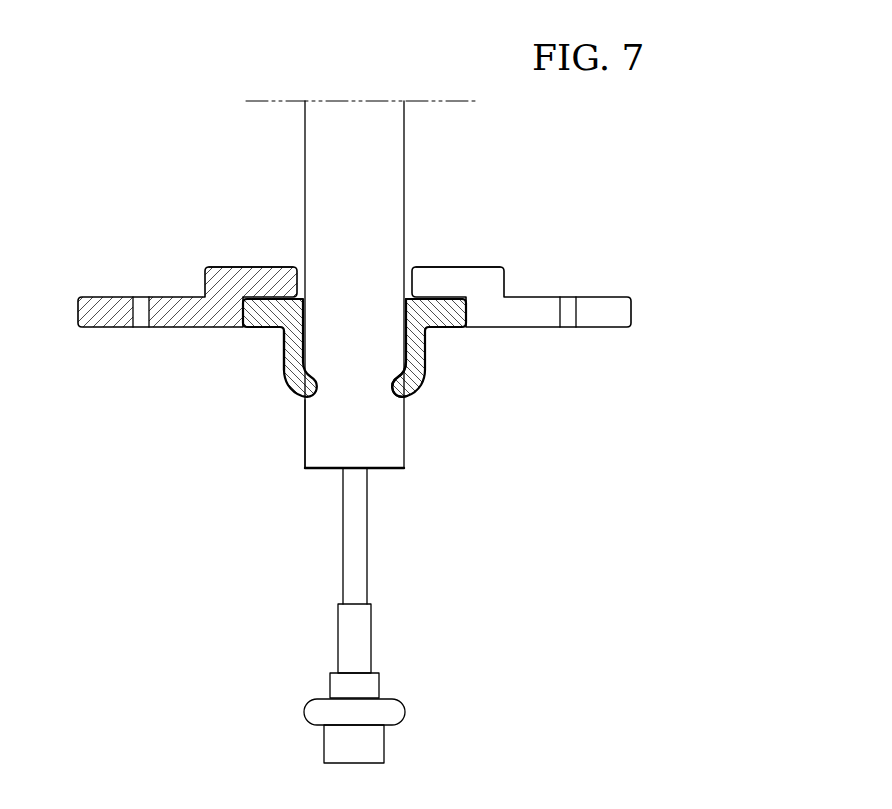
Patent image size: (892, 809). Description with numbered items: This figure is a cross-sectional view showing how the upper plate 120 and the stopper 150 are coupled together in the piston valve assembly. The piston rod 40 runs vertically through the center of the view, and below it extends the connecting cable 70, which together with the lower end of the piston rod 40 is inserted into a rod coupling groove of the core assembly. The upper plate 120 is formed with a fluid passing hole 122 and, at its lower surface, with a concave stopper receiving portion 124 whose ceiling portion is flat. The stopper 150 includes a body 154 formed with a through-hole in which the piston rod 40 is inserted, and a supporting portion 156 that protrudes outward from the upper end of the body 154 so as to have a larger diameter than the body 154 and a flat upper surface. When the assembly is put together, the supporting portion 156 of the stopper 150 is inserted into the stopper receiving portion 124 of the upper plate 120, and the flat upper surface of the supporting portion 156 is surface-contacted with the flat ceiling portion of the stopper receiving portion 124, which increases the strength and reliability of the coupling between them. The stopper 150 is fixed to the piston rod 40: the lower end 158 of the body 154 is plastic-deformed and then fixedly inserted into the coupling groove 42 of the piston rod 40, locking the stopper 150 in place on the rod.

The piston rod 40 is at (387, 163).
The coupling groove 42 is at (312, 390).
The connecting cable 70 is at (370, 633).
The upper plate 120 is at (390, 275).
The fluid passing hole 122 is at (142, 305).
The stopper receiving portion 124 is at (275, 287).
The stopper 150 is at (353, 397).
The body 154 is at (282, 352).
The supporting portion 156 is at (443, 300).
The lower end 158 is at (415, 395).